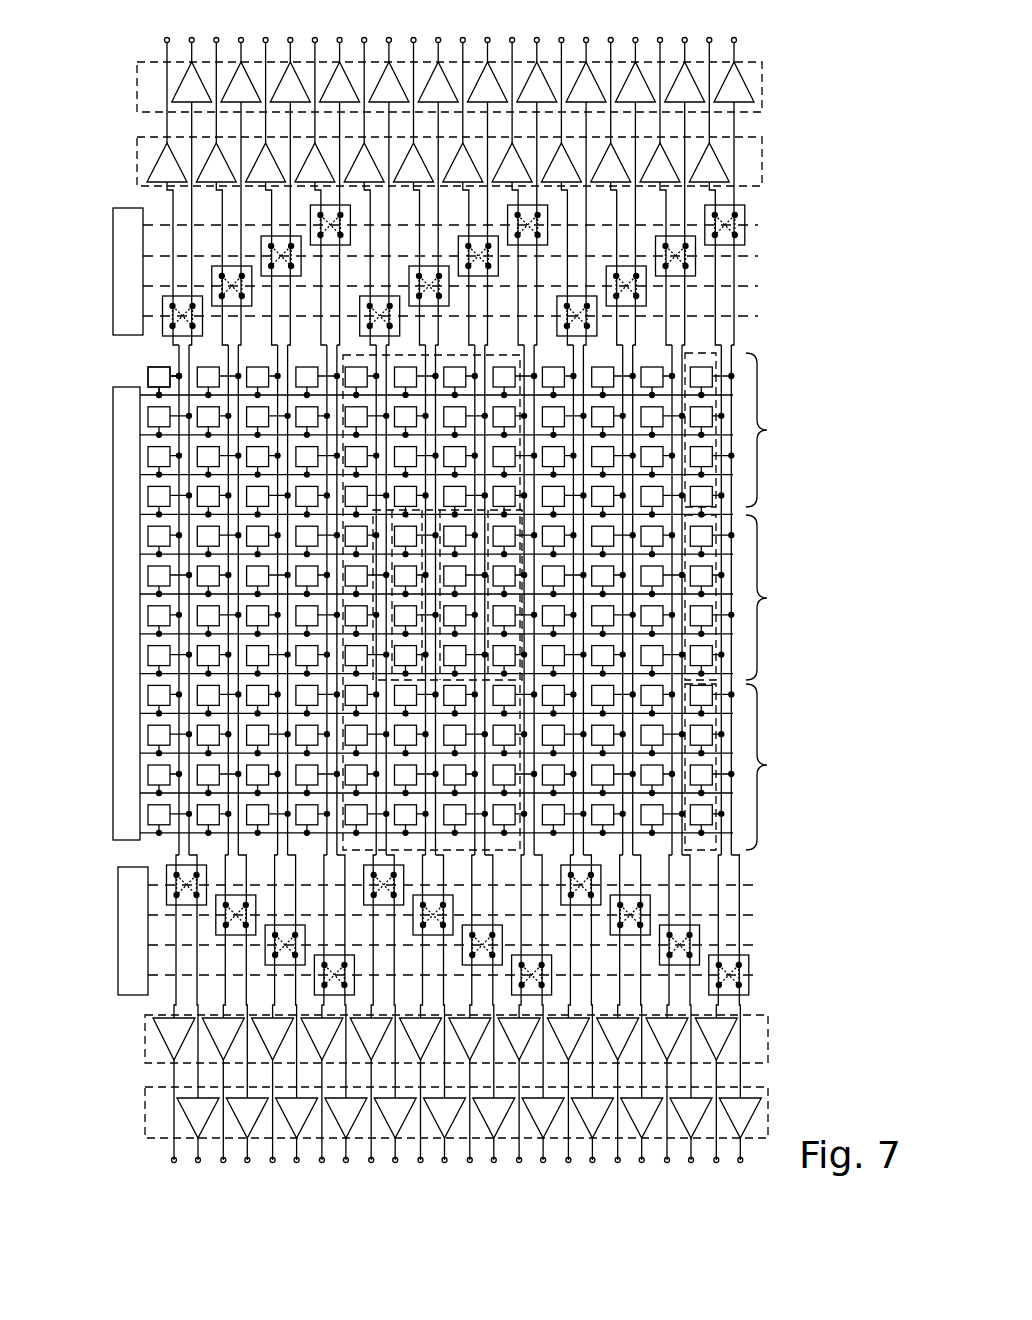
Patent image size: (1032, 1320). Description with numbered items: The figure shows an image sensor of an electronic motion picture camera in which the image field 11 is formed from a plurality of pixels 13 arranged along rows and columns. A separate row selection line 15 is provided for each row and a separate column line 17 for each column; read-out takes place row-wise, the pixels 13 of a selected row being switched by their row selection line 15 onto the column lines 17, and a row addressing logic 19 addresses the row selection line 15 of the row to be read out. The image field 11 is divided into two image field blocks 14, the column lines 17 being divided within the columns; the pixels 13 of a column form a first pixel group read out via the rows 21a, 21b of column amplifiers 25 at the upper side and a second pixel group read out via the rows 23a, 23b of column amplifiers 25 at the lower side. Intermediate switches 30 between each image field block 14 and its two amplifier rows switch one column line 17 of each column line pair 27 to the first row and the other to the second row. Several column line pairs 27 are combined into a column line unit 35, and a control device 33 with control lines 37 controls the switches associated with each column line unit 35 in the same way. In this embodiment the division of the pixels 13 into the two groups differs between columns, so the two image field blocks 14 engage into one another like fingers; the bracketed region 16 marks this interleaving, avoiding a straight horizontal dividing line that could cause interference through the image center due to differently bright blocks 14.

The image field 11 is at (860, 542).
The pixel 13 is at (146, 375).
The image field block 14 is at (774, 601).
The row selection line 15 is at (137, 475).
The cell group 16 is at (774, 597).
The column line 17 is at (172, 348).
The row addressing logic 19 is at (110, 635).
The first row of column amplifiers 21a is at (134, 88).
The second row of column amplifiers 21b is at (134, 162).
The first row of column amplifiers 23a is at (142, 1045).
The second row of column amplifiers 23b is at (142, 1113).
The column amplifier 25 is at (205, 75).
The column line pair 27 is at (721, 504).
The intermediate switch 30 is at (747, 224).
The control device 33 is at (111, 250).
The column line unit 35 is at (524, 356).
The control line 37 is at (386, 947).